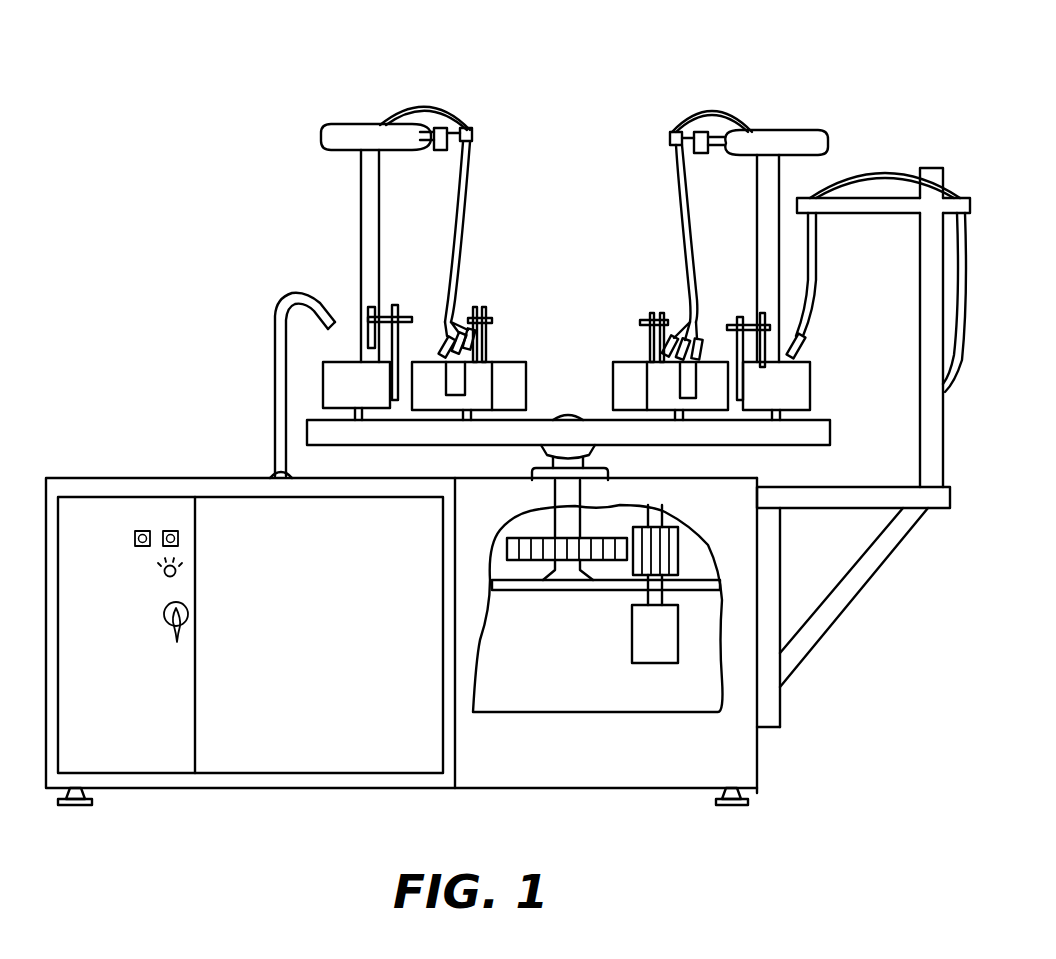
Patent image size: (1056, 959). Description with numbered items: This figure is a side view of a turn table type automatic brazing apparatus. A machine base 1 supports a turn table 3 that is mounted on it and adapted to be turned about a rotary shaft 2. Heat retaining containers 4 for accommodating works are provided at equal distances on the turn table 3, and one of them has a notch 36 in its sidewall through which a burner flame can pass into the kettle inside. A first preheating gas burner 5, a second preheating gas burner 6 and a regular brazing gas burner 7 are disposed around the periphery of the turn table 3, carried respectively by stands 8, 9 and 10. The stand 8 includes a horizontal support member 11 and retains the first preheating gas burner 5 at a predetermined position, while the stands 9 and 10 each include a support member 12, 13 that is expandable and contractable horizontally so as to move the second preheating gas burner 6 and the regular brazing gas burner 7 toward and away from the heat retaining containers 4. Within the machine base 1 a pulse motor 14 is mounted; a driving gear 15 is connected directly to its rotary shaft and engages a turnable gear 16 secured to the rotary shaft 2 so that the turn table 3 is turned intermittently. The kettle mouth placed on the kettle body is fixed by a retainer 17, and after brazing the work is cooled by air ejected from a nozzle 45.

The machine base 1 is at (145, 478).
The rotary shaft 2 is at (583, 462).
The turn table 3 is at (832, 437).
The heat retaining container 4 is at (805, 398).
The first preheating gas burner 5 is at (818, 293).
The second preheating gas burner 6 is at (688, 257).
The regular brazing gas burner 7 is at (458, 260).
The stand 8 is at (937, 305).
The stand 9 is at (756, 117).
The stand 10 is at (336, 118).
The horizontal support member 11 is at (859, 204).
The support member 12 is at (698, 132).
The support member 13 is at (441, 128).
The pulse motor 14 is at (675, 663).
The driving gear 15 is at (688, 565).
The turnable gear 16 is at (558, 580).
The retainer 17 is at (484, 342).
The notch 36 is at (674, 394).
The nozzle 45 is at (300, 294).